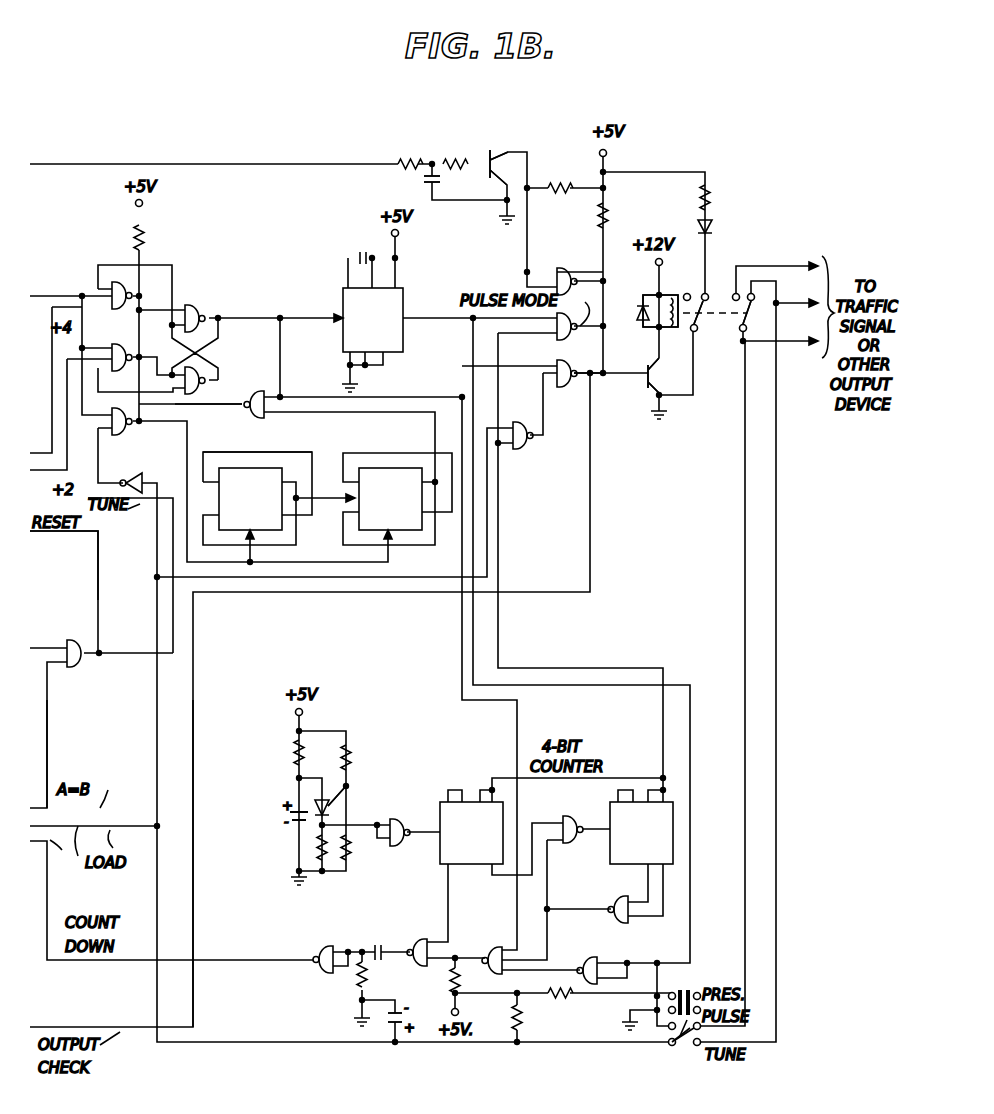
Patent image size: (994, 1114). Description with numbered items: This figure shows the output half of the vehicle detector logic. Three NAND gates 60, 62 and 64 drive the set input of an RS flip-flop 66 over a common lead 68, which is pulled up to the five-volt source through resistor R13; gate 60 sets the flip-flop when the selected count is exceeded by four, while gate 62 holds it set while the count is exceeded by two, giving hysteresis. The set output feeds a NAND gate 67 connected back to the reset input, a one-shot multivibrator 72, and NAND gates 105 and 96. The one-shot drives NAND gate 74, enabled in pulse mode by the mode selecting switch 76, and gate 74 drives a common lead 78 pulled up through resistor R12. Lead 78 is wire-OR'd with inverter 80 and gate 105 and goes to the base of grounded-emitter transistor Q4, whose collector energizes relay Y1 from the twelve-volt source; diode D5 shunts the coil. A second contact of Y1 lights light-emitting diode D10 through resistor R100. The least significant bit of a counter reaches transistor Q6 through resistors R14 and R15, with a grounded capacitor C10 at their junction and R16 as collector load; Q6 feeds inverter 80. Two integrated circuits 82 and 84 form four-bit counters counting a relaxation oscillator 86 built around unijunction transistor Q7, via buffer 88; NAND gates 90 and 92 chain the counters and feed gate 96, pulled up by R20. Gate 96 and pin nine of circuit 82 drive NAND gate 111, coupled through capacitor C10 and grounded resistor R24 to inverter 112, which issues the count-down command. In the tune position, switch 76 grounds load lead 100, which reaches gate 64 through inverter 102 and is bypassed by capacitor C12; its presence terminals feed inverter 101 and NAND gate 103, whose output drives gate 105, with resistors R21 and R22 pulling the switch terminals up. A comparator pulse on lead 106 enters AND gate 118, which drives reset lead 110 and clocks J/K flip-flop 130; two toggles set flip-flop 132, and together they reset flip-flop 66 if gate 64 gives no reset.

The NAND gate 60 is at (116, 282).
The NAND gate 62 is at (127, 345).
The NAND gate 64 is at (120, 437).
The RS flip-flop 66 is at (205, 325).
The NAND gate 67 is at (252, 418).
The common lead 68 is at (195, 405).
The one-shot multivibrator 72 is at (402, 337).
The NAND gate 74 is at (560, 334).
The mode selecting switch 76 is at (682, 1036).
The common lead 78 is at (598, 348).
The inverter 80 is at (570, 268).
The integrated circuit 82 is at (472, 802).
The integrated circuit 84 is at (610, 808).
The relaxation oscillator 86 is at (350, 728).
The buffer 88 is at (398, 818).
The NAND gate 90 is at (570, 843).
The NAND gate 92 is at (618, 896).
The NAND gate 96 is at (496, 947).
The load lead 100 is at (380, 592).
The inverter 101 is at (588, 958).
The inverter 102 is at (140, 476).
The NAND gate 103 is at (525, 437).
The NAND gate 105 is at (568, 388).
The lead 106 is at (47, 755).
The reset lead 110 is at (98, 552).
The NAND gate 111 is at (420, 940).
The inverter 112 is at (322, 948).
The AND gate 118 is at (76, 668).
The J/K flip-flop 130 is at (258, 480).
The J/K flip-flop 132 is at (365, 480).
The resistor R13 is at (130, 240).
The resistor R14 is at (404, 158).
The resistor R15 is at (452, 156).
The resistor R16 is at (572, 176).
The resistor R12 is at (600, 212).
The resistor R100 is at (712, 195).
The resistor R20 is at (452, 976).
The resistor R21 is at (558, 998).
The resistor R22 is at (522, 1018).
The resistor R24 is at (358, 982).
The capacitor C10 is at (424, 182).
The capacitor C12 is at (385, 1018).
The NPN transistor Q6 is at (490, 150).
The unijunction transistor Q7 is at (340, 806).
The NPN transistor Q4 is at (646, 385).
The diode D5 is at (640, 318).
The light-emitting diode D10 is at (712, 222).
The relay Y1 is at (722, 285).